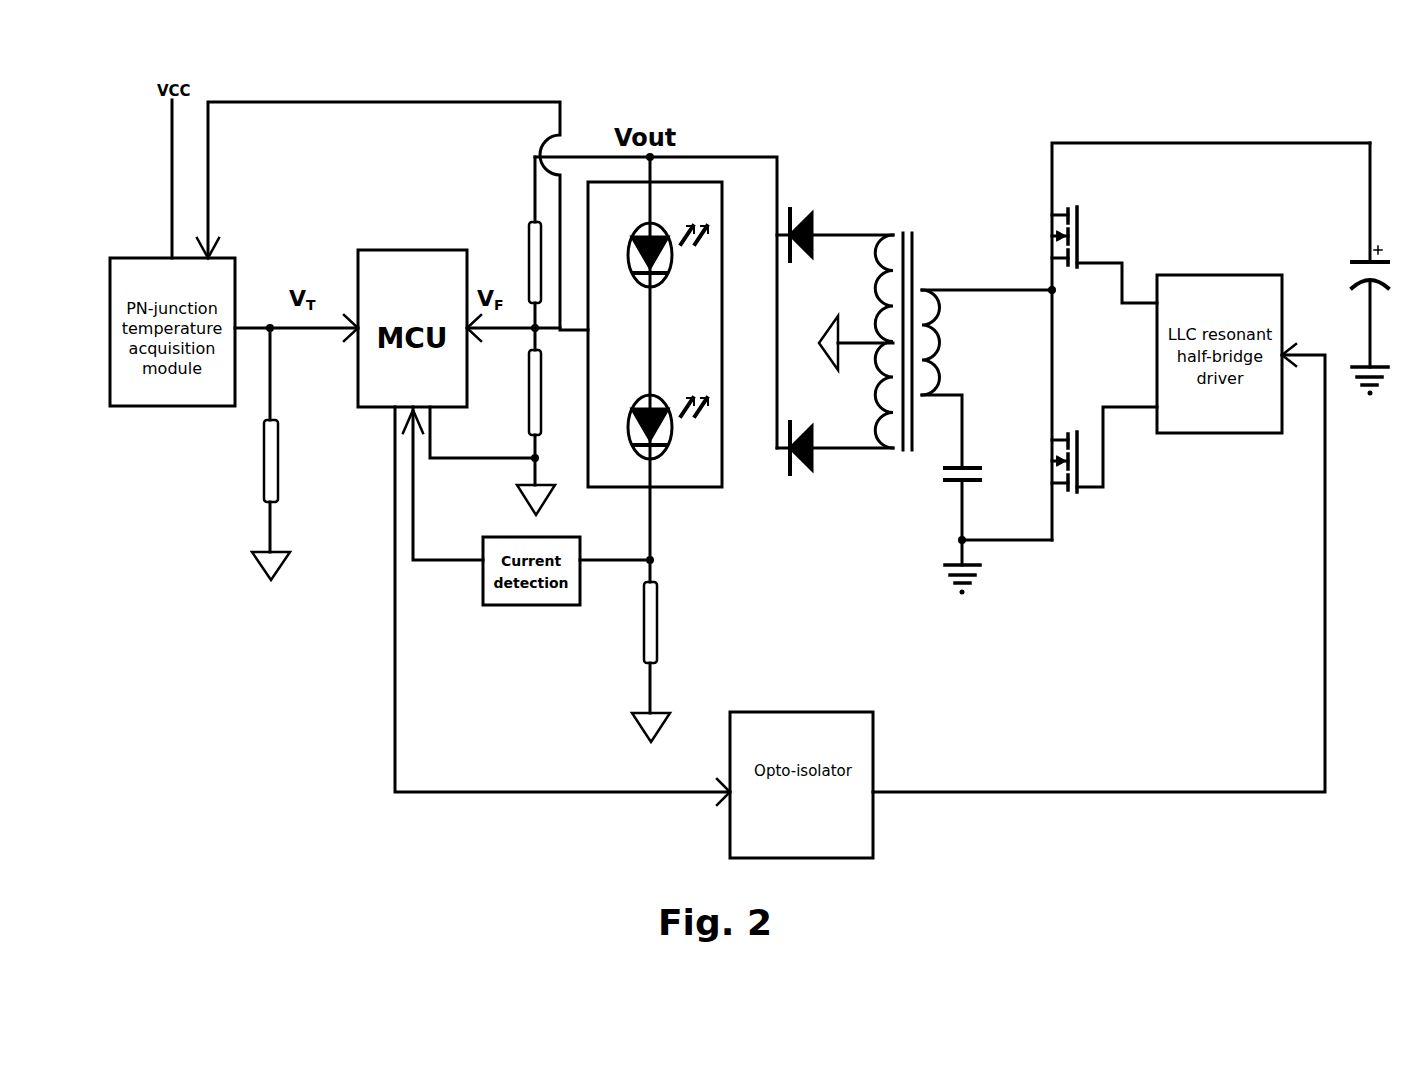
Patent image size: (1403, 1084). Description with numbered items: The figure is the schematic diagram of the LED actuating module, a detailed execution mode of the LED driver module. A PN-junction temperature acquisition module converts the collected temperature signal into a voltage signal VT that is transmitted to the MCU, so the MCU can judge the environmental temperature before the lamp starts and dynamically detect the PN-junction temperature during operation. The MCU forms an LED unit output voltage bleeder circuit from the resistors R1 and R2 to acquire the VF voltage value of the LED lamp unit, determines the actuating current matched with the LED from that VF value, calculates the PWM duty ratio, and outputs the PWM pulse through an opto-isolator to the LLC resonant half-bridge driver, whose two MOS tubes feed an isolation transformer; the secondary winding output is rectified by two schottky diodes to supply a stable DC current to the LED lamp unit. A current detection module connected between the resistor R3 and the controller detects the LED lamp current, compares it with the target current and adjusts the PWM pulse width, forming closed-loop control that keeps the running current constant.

The resistor R1 is at (545, 242).
The resistor R2 is at (545, 406).
The resistor R3 is at (667, 647).